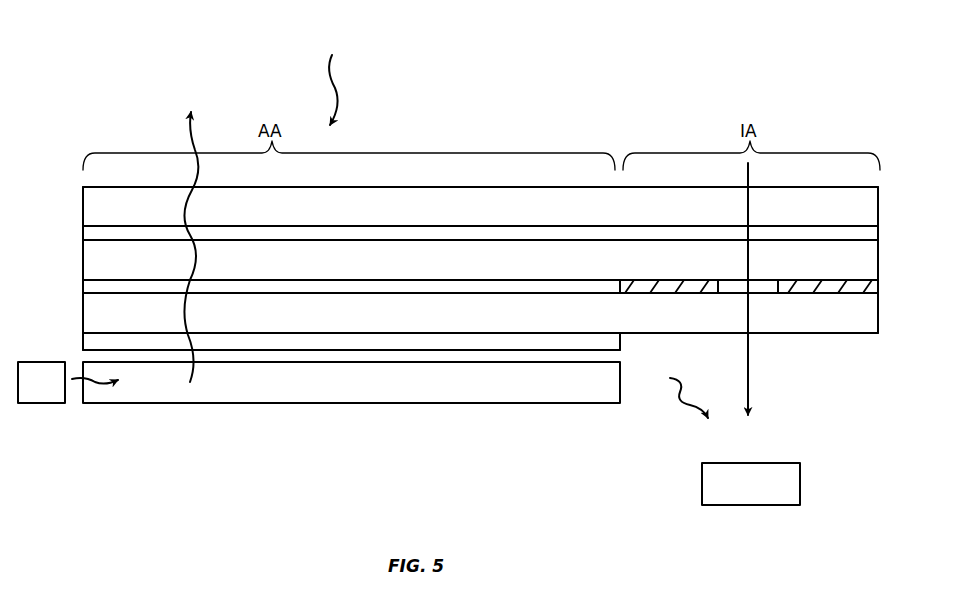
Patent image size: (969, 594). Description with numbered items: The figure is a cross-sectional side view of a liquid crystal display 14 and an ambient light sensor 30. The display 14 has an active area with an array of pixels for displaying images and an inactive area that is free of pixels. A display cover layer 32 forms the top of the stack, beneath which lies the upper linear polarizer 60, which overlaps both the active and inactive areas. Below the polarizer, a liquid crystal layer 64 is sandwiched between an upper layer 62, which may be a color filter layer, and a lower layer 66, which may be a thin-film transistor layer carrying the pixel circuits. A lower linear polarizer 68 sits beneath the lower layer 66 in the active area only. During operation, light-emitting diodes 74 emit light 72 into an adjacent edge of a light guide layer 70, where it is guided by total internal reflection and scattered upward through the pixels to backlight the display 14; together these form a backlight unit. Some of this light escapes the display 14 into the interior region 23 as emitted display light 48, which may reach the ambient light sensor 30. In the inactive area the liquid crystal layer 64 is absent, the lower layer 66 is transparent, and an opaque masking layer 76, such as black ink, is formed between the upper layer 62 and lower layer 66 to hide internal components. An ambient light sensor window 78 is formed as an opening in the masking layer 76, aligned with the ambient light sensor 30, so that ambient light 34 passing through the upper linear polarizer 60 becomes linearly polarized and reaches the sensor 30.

The display 14 is at (542, 90).
The interior region 23 is at (528, 442).
The ambient light sensor 30 is at (802, 480).
The display cover layer 32 is at (865, 203).
The ambient light 34 is at (335, 88).
The emitted display light 48 is at (190, 137).
The upper linear polarizer 60 is at (865, 233).
The upper layer 62 is at (88, 258).
The liquid crystal layer 64 is at (88, 287).
The lower layer 66 is at (88, 315).
The lower linear polarizer 68 is at (88, 340).
The light guide layer 70 is at (158, 392).
The light 72 is at (99, 388).
The light-emitting diodes 74 is at (42, 395).
The opaque masking layer 76 is at (663, 283).
The ambient light sensor window 78 is at (767, 283).